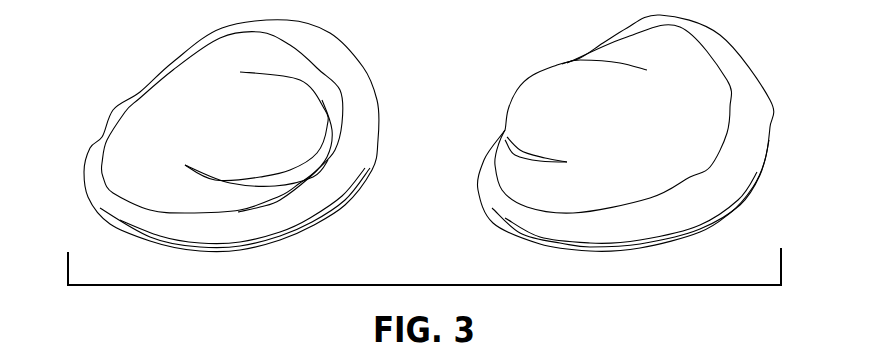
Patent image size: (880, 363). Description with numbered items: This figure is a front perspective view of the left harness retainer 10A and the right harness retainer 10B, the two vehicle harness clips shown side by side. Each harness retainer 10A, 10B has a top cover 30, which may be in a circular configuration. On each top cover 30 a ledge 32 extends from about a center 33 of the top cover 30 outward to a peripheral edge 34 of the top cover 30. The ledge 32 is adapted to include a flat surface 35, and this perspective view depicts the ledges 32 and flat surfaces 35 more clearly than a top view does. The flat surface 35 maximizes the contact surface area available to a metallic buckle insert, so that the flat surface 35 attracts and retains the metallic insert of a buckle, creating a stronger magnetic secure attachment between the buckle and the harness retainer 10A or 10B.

The left harness retainer 10A is at (93, 192).
The right harness retainer 10B is at (743, 187).
The top cover 30 is at (125, 158).
The ledge 32 is at (268, 80).
The center 33 is at (220, 118).
The peripheral edge 34 is at (375, 142).
The flat surface 35 is at (281, 137).